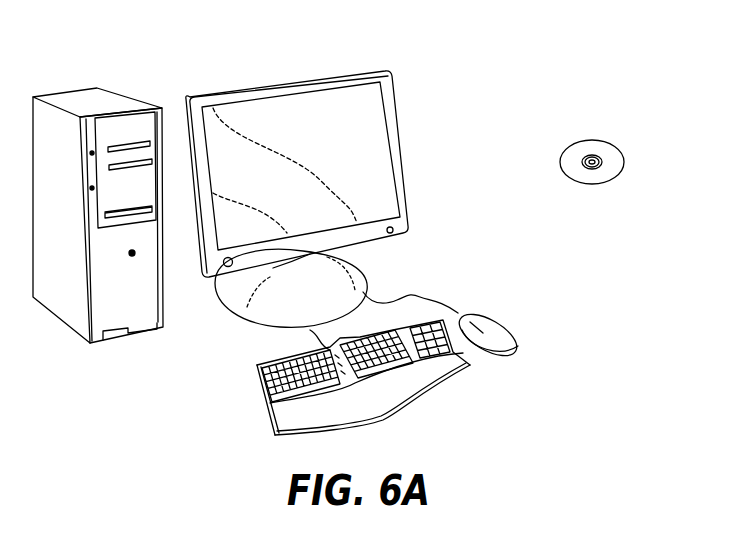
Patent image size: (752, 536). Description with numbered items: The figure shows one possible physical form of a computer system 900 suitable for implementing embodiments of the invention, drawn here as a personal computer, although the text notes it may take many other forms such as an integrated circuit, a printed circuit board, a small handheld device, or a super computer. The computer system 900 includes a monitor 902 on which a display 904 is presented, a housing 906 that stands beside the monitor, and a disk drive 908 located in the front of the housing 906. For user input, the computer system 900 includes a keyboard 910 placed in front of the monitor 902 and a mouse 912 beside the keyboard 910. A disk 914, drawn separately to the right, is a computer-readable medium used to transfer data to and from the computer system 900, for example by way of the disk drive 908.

The computer system 900 is at (522, 52).
The monitor 902 is at (407, 170).
The display 904 is at (363, 110).
The housing 906 is at (85, 100).
The disk drive 908 is at (150, 215).
The keyboard 910 is at (270, 407).
The mouse 912 is at (508, 328).
The disk 914 is at (608, 140).